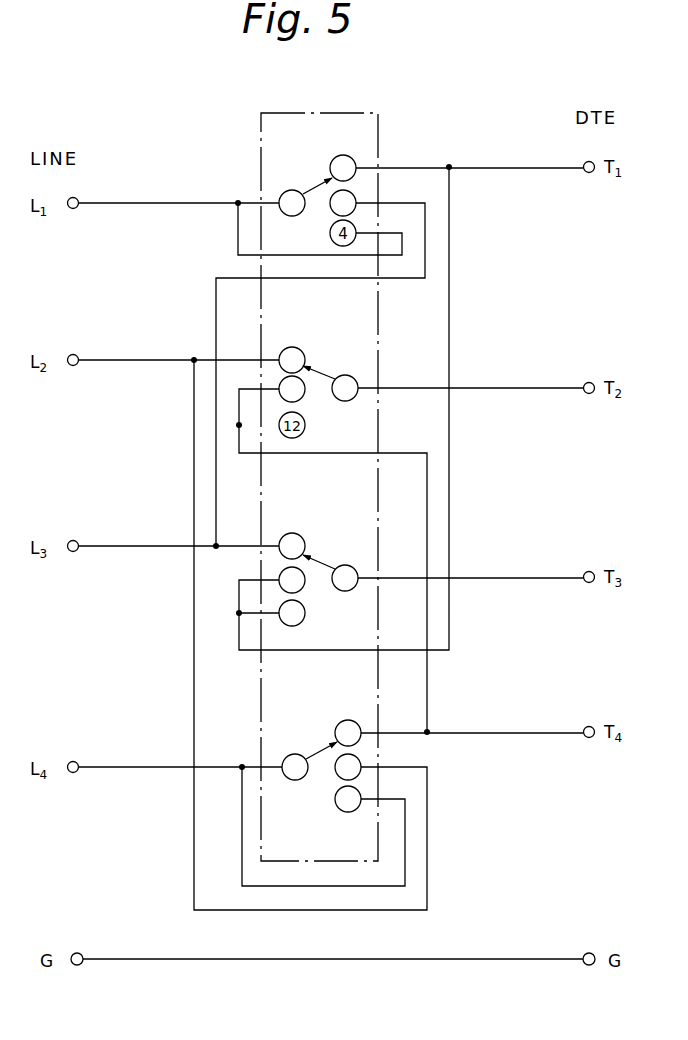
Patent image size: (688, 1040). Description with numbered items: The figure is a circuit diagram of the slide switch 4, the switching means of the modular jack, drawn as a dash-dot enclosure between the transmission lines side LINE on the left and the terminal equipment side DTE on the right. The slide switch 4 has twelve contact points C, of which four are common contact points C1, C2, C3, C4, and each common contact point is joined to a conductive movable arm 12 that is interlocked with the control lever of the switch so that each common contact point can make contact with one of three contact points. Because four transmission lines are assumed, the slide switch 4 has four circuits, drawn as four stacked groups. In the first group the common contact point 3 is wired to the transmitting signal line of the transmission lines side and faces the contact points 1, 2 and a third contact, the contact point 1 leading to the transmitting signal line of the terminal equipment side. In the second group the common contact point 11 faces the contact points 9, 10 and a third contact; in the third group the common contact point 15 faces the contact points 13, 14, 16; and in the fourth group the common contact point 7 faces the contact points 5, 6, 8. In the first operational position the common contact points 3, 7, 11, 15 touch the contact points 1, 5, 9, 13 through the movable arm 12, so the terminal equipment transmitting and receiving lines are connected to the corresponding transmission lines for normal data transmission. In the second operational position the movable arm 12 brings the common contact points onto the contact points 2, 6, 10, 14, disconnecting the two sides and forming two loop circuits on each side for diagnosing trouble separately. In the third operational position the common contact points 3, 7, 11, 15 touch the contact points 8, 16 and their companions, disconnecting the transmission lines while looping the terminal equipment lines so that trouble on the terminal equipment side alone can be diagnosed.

The slide switch 4 is at (358, 113).
The movable arm 12 is at (318, 185).
The contact points C is at (352, 161).
The common contact point C1 is at (290, 189).
The common contact point C2 is at (345, 374).
The common contact point C3 is at (345, 564).
The common contact point C4 is at (291, 753).
The contact point 1 is at (343, 168).
The contact point 2 is at (343, 203).
The common contact point 3 is at (292, 203).
The contact point 5 is at (348, 733).
The contact point 6 is at (348, 767).
The common contact point 7 is at (295, 767).
The contact point 8 is at (348, 799).
The contact point 9 is at (292, 360).
The contact point 10 is at (292, 389).
The common contact point 11 is at (345, 388).
The contact point 13 is at (292, 546).
The contact point 14 is at (292, 580).
The common contact point 15 is at (345, 578).
The contact point 16 is at (292, 613).